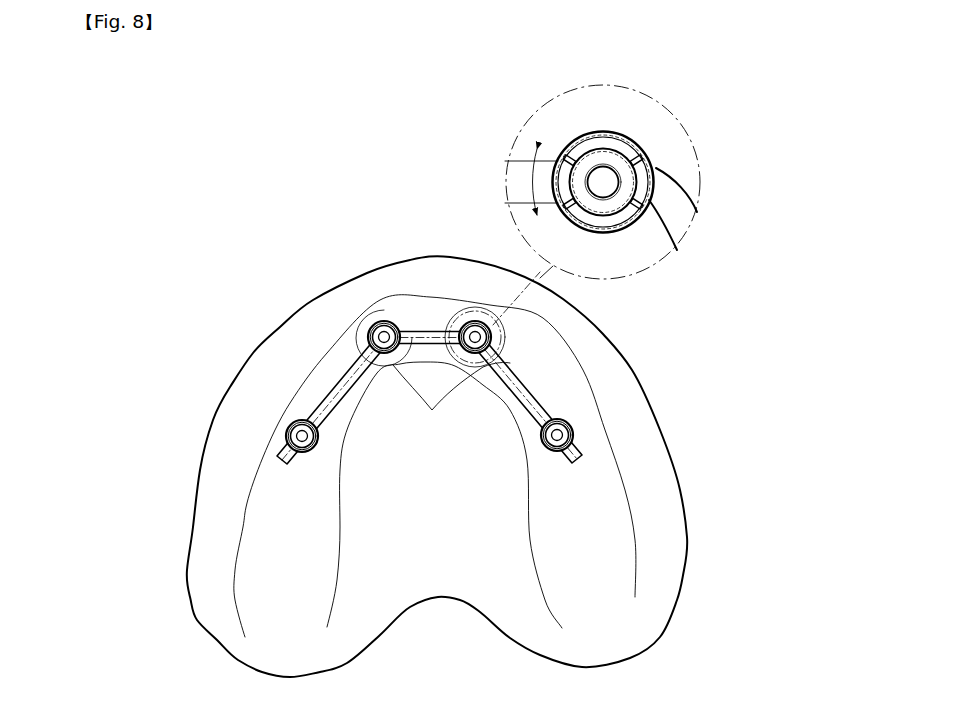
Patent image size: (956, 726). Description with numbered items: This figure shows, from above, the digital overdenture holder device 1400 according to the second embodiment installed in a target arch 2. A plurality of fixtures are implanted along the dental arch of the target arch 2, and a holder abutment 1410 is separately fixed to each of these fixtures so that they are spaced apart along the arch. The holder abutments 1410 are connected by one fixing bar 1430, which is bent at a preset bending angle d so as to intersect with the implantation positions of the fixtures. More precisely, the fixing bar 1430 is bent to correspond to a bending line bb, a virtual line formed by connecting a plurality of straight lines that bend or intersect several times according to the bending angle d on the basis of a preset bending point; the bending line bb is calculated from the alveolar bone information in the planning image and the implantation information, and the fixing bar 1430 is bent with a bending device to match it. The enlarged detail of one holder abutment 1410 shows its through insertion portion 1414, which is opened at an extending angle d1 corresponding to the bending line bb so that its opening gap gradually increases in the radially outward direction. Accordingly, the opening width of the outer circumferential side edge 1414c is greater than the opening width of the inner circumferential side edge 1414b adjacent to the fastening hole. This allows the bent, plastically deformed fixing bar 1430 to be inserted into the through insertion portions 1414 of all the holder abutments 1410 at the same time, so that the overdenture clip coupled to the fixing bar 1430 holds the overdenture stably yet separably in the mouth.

The target arch 2 is at (270, 527).
The digital overdenture holder device 1400 is at (214, 273).
The holder abutment 1410 is at (372, 320).
The fixing bar 1430 is at (320, 397).
The through insertion portion 1414 is at (585, 133).
The inner circumferential side edge 1414b is at (570, 224).
The outer circumferential side edge 1414c is at (568, 205).
The bending angle d is at (432, 428).
The extending angle d1 is at (530, 183).
The bending line bb is at (565, 378).